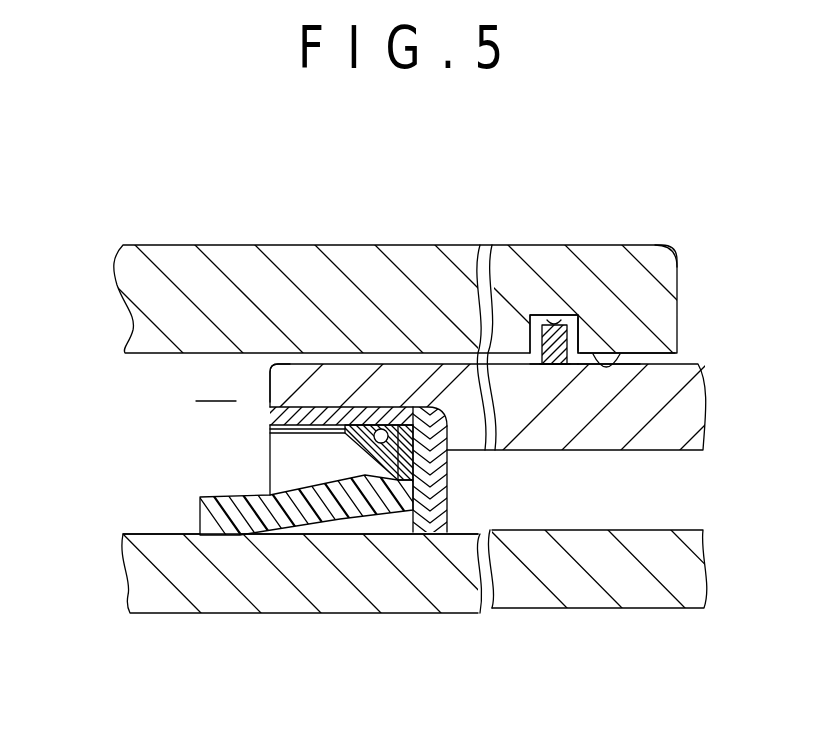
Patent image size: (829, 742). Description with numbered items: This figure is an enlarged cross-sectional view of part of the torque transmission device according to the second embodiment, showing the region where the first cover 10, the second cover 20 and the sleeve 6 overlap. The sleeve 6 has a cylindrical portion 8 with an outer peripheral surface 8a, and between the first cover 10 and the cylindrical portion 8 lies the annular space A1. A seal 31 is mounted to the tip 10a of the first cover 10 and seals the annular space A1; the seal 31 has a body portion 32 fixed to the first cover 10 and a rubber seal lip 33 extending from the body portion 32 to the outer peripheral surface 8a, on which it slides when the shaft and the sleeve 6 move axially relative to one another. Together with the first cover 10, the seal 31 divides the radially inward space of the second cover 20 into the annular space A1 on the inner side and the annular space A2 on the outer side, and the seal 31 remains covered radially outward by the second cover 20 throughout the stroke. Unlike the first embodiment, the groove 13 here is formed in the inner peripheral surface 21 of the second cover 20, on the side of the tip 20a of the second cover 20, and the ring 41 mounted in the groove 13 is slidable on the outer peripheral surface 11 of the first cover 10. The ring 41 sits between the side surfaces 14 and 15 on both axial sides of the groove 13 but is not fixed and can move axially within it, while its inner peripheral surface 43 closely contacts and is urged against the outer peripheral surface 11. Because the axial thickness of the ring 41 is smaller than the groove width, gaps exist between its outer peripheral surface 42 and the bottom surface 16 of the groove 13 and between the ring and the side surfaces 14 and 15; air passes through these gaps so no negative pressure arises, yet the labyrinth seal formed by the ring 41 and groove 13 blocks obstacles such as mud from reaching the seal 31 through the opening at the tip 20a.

The second cover 20 is at (166, 260).
The tip of the second cover 20a is at (680, 264).
The inner peripheral surface of the second cover 21 is at (630, 353).
The outer peripheral surface of the ring 42 is at (570, 316).
The bottom surface of the groove 16 is at (541, 316).
The side surface of the groove 15 is at (578, 347).
The side surface of the groove 14 is at (491, 245).
The outer peripheral surface of the first cover 11 is at (482, 330).
The first cover 10 is at (668, 386).
The tip of the first cover 10a is at (289, 363).
The body portion 32 is at (398, 406).
The seal 31 is at (262, 437).
The seal lip 33 is at (212, 518).
The ring 41 is at (567, 366).
The groove 13 is at (533, 366).
The inner peripheral surface of the ring 43 is at (562, 366).
The sleeve 6 is at (140, 580).
The cylindrical portion 8 is at (306, 576).
The outer peripheral surface of the cylindrical portion 8a is at (137, 533).
The annular space A1 is at (548, 508).
The annular space A2 is at (216, 386).